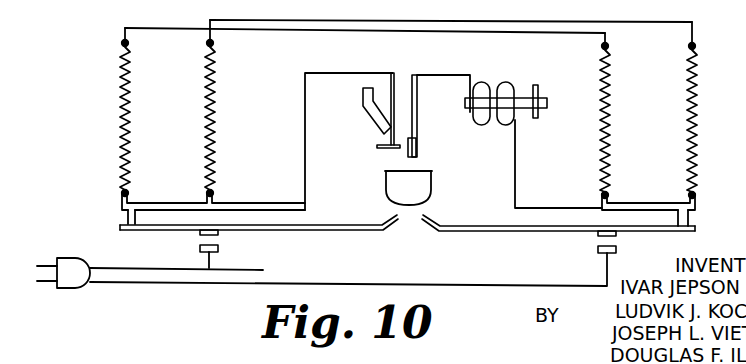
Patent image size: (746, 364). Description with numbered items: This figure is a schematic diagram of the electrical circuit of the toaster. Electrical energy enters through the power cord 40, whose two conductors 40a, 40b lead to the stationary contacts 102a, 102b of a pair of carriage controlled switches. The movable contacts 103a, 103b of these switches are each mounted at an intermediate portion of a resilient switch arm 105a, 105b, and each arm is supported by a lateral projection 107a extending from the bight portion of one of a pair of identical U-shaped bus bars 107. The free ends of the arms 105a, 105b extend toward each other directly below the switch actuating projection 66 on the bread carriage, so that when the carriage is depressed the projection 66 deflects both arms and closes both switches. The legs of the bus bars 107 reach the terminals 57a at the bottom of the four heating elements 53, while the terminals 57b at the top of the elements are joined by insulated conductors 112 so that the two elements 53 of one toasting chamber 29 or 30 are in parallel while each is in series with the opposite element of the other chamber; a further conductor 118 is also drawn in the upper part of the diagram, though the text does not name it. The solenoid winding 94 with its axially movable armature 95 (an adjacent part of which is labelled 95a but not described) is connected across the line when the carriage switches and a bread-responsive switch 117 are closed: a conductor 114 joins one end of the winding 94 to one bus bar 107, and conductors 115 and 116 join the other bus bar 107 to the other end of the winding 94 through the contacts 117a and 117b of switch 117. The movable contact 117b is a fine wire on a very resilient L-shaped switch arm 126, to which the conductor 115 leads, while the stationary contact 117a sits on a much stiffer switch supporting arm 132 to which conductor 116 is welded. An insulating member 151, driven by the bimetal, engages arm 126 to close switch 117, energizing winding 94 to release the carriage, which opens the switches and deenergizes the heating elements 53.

The conductor 118 is at (397, 6).
The insulated conductor 112 is at (560, 32).
The terminal 57b is at (206, 43).
The electric heating element 53 is at (121, 98).
The toasting chamber 30 is at (165, 111).
The toasting chamber 29 is at (648, 117).
The terminal 57a is at (122, 192).
The U-shaped bus bar 107 is at (167, 204).
The lateral projection 107a is at (124, 215).
The conductor 115 is at (304, 147).
The resilient L-shaped switch arm 126 is at (395, 71).
The insulating member 151 is at (362, 103).
The movable contact 117b is at (385, 150).
The switch supporting arm 132 is at (408, 86).
The switch 117 is at (403, 130).
The stationary contact 117a is at (418, 147).
The conductor 116 is at (450, 74).
The solenoid winding 94 is at (480, 123).
The armature 95 is at (527, 96).
The armature bar 95a is at (540, 101).
The conductor 114 is at (516, 154).
The switch actuating projection 66 is at (433, 172).
The resilient switch arm 105b is at (322, 232).
The resilient switch arm 105a is at (447, 232).
The movable contact 103b is at (200, 234).
The stationary contact 102b is at (218, 249).
The movable contact 103a is at (616, 235).
The stationary contact 102a is at (598, 251).
The power cord 40 is at (140, 263).
The power cord conductor 40b is at (193, 266).
The power cord conductor 40a is at (562, 268).